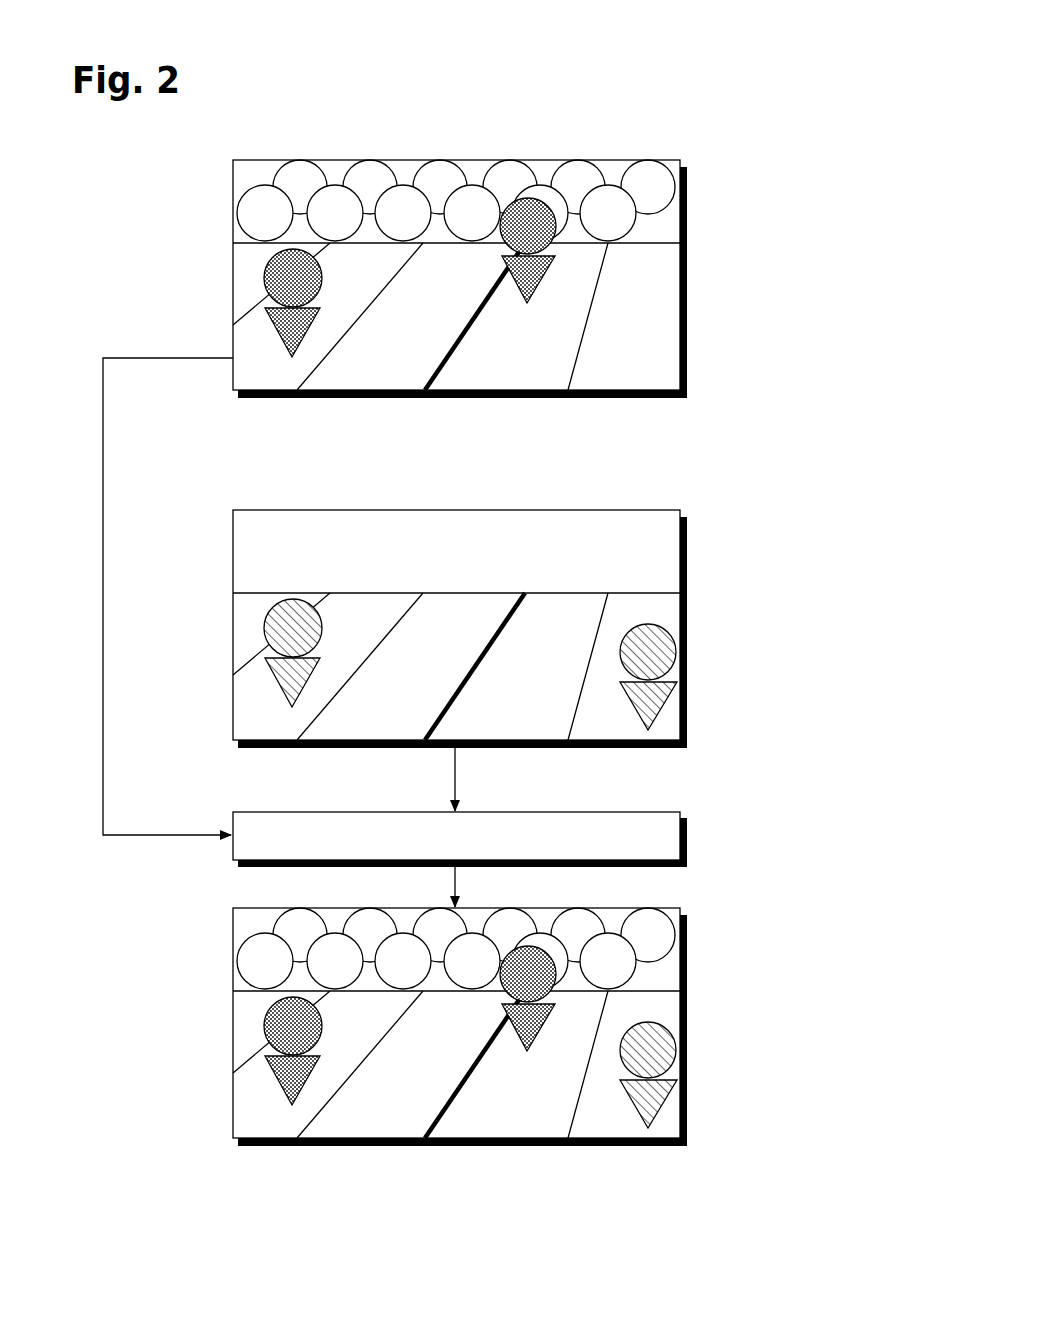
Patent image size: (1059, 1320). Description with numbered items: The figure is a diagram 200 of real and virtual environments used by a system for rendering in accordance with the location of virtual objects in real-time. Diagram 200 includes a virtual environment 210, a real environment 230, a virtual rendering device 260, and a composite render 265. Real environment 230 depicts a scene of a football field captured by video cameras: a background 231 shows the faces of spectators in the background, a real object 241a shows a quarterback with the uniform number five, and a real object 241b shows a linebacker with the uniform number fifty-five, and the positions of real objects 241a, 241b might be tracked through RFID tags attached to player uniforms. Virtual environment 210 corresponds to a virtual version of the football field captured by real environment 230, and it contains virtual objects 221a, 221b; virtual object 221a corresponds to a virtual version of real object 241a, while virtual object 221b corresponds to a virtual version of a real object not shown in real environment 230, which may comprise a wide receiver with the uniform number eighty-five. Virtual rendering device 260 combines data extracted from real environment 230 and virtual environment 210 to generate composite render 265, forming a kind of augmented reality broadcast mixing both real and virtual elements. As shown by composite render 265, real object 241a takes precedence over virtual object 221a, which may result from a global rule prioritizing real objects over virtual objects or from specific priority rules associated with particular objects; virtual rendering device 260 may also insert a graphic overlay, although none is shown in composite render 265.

The diagram 200 is at (768, 122).
The virtual environment 210 is at (483, 654).
The virtual object 221a is at (266, 618).
The virtual object 221b is at (683, 645).
The real environment 230 is at (461, 265).
The background 231 is at (697, 242).
The real object 241a is at (271, 260).
The real object 241b is at (530, 199).
The virtual rendering device 260 is at (460, 839).
The composite render 265 is at (638, 1147).